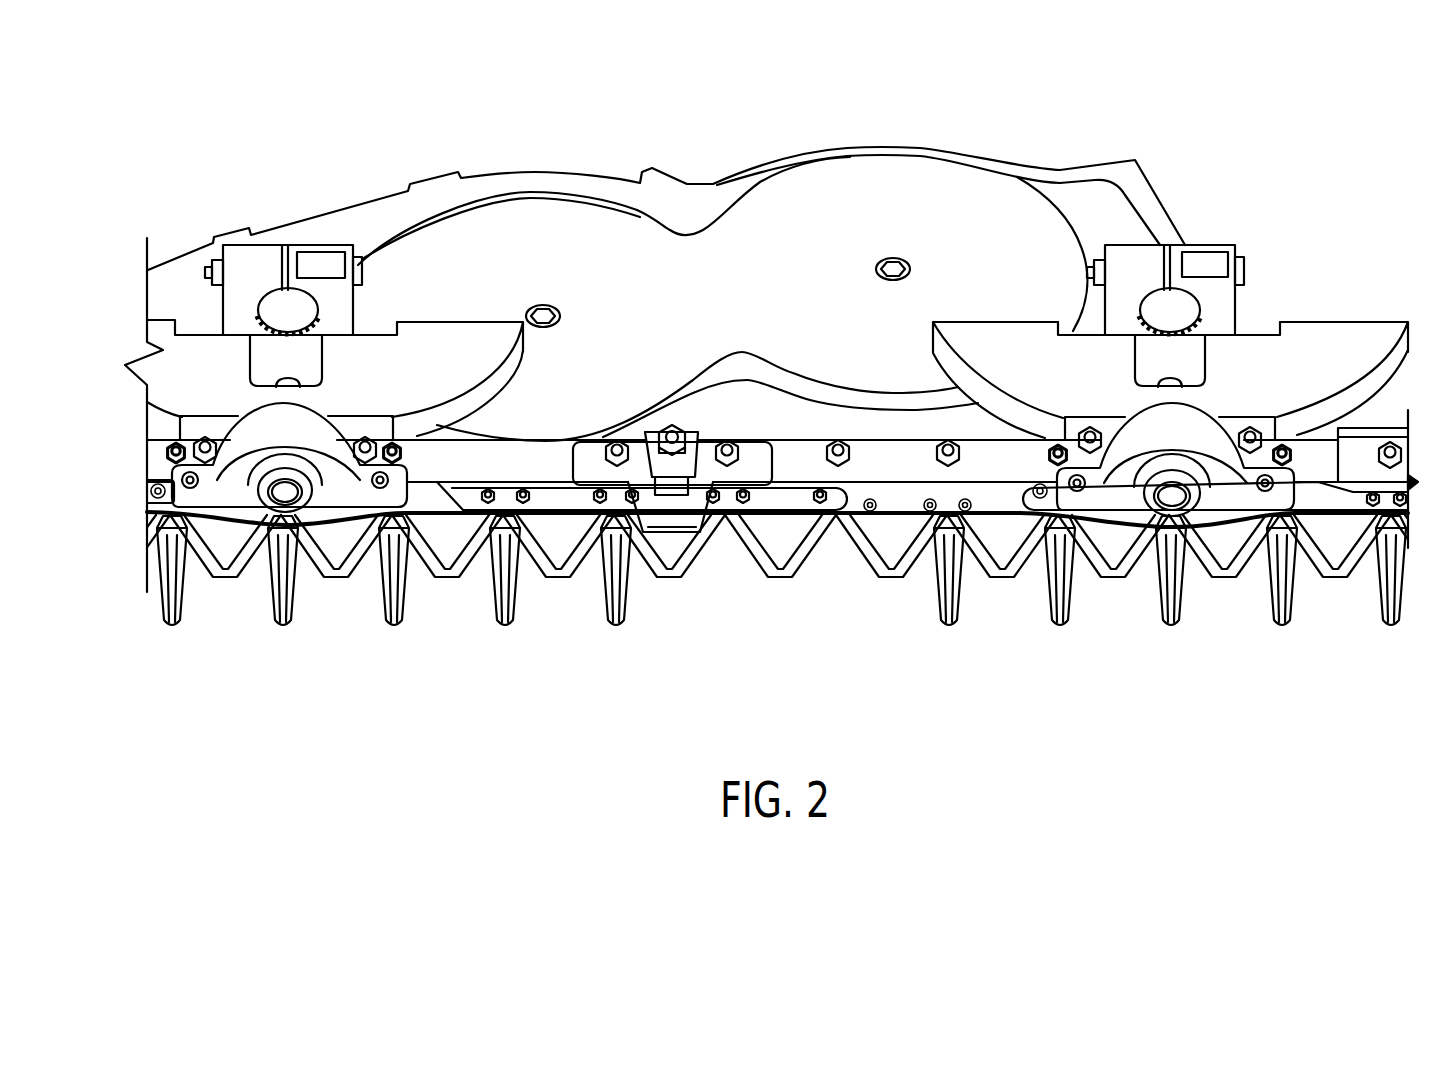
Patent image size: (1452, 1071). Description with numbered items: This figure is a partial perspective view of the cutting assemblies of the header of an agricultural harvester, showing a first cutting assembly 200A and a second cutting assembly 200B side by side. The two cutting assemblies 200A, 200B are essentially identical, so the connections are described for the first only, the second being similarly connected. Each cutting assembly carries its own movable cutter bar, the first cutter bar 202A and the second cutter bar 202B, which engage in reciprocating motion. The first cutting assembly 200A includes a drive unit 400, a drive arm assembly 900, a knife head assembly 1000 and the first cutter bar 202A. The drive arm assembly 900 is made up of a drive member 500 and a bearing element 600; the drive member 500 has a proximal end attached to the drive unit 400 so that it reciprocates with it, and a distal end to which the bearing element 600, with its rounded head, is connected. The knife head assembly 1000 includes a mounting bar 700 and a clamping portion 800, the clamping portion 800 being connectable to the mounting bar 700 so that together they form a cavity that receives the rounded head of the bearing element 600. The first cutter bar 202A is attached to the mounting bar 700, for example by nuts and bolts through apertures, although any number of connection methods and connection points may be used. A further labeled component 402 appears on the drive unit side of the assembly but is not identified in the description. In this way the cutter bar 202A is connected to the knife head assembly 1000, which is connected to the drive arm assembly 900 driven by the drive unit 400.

The first cutting assembly 200A is at (1186, 685).
The second cutting assembly 200B is at (274, 668).
The first cutter bar 202A is at (1001, 579).
The second cutter bar 202B is at (566, 578).
The drive unit 400 is at (702, 272).
The adjustment knob 402 is at (297, 313).
The drive member 500 is at (465, 352).
The bearing element 600 is at (1171, 494).
The mounting bar 700 is at (1327, 525).
The clamping portion 800 is at (1107, 495).
The drive arm assembly 900 is at (1237, 197).
The knife head assembly 1000 is at (998, 520).